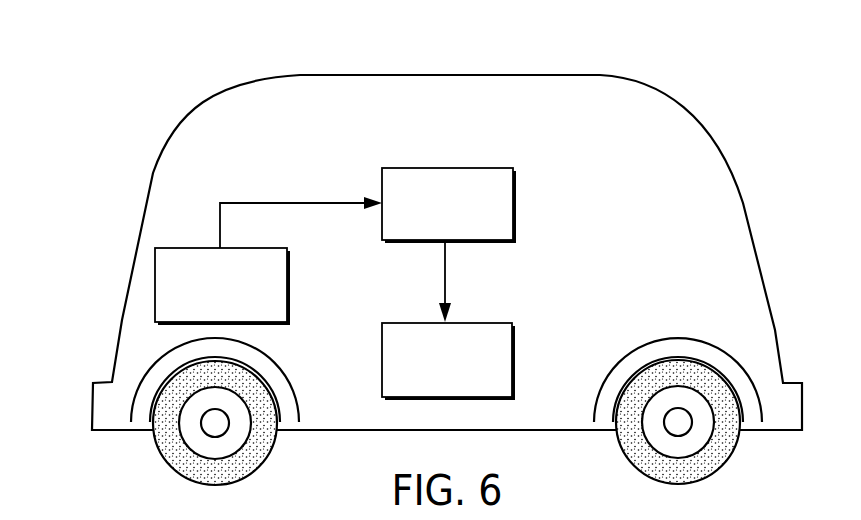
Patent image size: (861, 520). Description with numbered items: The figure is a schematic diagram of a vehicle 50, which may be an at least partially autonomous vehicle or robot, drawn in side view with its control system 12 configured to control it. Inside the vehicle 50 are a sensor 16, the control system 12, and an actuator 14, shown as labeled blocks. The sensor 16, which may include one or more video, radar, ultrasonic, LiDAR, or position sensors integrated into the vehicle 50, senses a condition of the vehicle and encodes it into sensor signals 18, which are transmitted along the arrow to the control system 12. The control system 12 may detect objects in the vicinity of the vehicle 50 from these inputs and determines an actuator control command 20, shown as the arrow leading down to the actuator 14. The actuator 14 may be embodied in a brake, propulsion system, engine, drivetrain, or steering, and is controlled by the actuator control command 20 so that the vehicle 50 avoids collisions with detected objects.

The vehicle 50 is at (106, 38).
The control system 12 is at (447, 168).
The actuator 14 is at (382, 358).
The sensor 16 is at (289, 290).
The sensor signals 18 is at (300, 203).
The actuator control command 20 is at (445, 283).